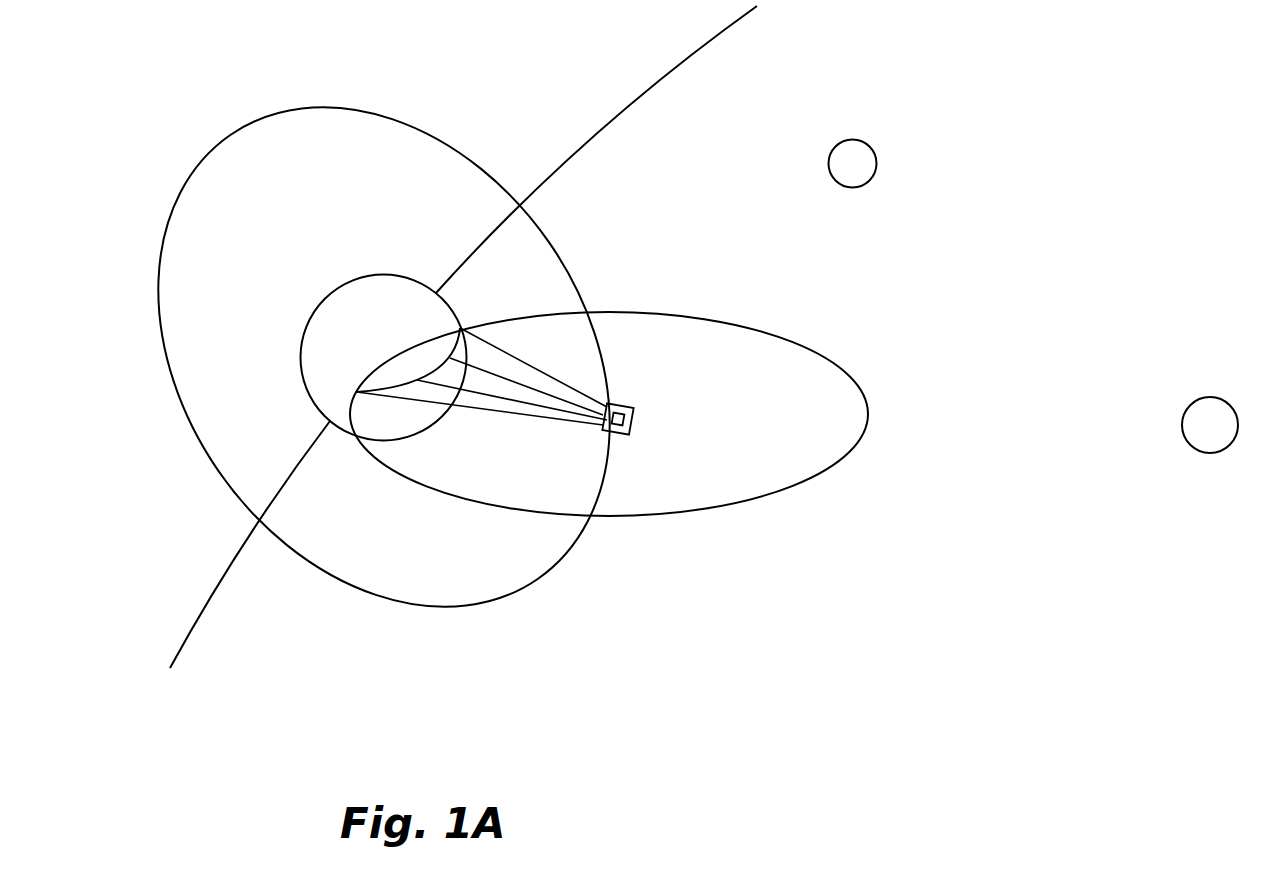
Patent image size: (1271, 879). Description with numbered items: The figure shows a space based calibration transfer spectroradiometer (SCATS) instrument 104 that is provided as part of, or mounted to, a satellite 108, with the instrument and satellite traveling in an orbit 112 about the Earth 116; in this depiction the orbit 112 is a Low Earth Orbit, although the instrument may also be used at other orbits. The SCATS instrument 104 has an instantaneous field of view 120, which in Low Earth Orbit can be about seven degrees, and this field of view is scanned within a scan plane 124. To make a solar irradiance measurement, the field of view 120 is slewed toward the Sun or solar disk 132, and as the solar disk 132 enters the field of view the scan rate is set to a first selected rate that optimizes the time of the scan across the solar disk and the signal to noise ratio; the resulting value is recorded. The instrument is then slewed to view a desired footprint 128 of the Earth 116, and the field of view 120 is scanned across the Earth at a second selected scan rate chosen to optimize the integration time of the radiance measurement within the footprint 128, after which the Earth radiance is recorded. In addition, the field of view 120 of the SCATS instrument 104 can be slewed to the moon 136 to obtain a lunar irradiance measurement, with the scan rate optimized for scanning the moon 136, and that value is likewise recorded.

The space based calibration transfer spectroradiometer (SCATS) instrument 104 is at (614, 433).
The satellite 108 is at (637, 417).
The orbit 112 is at (193, 168).
The Earth 116 is at (312, 328).
The instantaneous field of view 120 is at (475, 387).
The scan plane 124 is at (792, 378).
The footprint 128 is at (453, 357).
The solar disk 132 is at (1200, 453).
The moon 136 is at (870, 145).